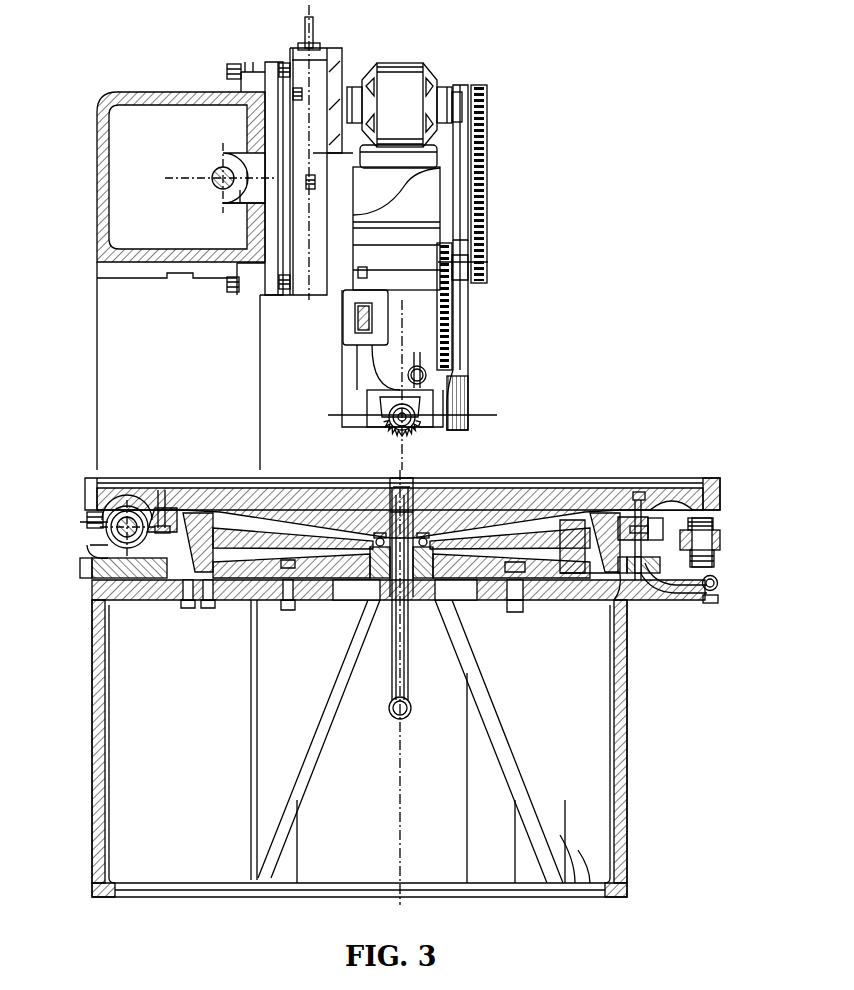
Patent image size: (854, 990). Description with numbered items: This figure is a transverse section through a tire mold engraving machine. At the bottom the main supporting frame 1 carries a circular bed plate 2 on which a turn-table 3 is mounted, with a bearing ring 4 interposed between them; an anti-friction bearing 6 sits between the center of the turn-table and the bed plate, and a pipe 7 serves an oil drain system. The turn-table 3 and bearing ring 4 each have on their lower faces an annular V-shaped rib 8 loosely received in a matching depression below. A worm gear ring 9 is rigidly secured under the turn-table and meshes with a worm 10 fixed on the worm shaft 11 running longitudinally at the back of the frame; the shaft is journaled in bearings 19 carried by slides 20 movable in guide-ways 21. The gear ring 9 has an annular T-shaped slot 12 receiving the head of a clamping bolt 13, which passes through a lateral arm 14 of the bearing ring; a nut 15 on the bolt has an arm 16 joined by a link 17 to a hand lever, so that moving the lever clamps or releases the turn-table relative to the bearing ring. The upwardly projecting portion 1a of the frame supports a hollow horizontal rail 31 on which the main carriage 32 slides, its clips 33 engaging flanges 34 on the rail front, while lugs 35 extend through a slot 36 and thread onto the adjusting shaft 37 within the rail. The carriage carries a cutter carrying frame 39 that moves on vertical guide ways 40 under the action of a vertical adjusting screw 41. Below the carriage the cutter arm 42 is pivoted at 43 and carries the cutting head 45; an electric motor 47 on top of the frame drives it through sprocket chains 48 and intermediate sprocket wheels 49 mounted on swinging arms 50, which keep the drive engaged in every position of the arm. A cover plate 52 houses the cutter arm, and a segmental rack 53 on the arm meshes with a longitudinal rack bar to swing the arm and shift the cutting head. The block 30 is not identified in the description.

The main supporting frame 1 is at (627, 752).
The upwardly projecting portion 1a is at (236, 382).
The bed plate 2 is at (614, 580).
The turn-table 3 is at (722, 492).
The bearing ring 4 is at (622, 566).
The anti-friction bearing 6 is at (433, 540).
The pipe 7 is at (410, 652).
The annular V-shaped rib 8 is at (188, 600).
The worm gear ring 9 is at (187, 488).
The worm 10 is at (110, 532).
The worm shaft 11 is at (87, 521).
The annular T-shaped slot 12 is at (158, 488).
The clamping bolt 13 is at (632, 522).
The lateral arm 14 is at (722, 556).
The nut 15 is at (641, 576).
The arm 16 is at (685, 594).
The link 17 is at (718, 583).
The bearing 19 is at (90, 550).
The slide 20 is at (98, 578).
The guide-way 21 is at (85, 576).
The block 30 is at (722, 537).
The hollow horizontal rail portion 31 is at (163, 93).
The main carriage 32 is at (264, 70).
The clip 33 is at (243, 66).
The flange 34 is at (250, 84).
The lug 35 is at (236, 203).
The slot 36 is at (247, 152).
The adjusting shaft 37 is at (211, 183).
The cutter carrying frame 39 is at (345, 208).
The vertical guide way 40 is at (342, 56).
The vertical adjusting screw 41 is at (314, 28).
The cutter arm 42 is at (380, 400).
The pivotal connection 43 is at (452, 418).
The cutting head 45 is at (416, 432).
The electric motor 47 is at (400, 73).
The sprocket chain 48 is at (488, 180).
The intermediate sprocket wheel 49 is at (437, 262).
The swinging arm 50 is at (488, 158).
The cover plate 52 is at (464, 360).
The segmental rack 53 is at (357, 357).